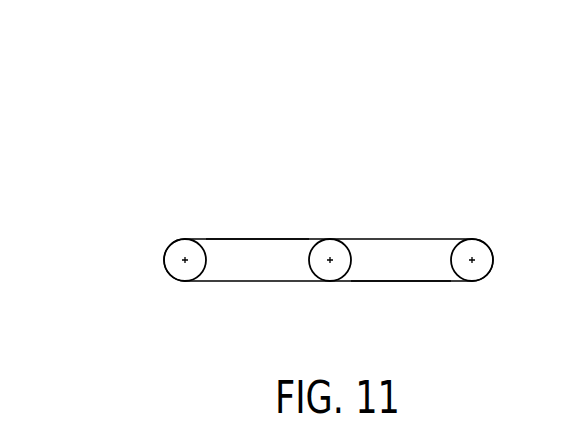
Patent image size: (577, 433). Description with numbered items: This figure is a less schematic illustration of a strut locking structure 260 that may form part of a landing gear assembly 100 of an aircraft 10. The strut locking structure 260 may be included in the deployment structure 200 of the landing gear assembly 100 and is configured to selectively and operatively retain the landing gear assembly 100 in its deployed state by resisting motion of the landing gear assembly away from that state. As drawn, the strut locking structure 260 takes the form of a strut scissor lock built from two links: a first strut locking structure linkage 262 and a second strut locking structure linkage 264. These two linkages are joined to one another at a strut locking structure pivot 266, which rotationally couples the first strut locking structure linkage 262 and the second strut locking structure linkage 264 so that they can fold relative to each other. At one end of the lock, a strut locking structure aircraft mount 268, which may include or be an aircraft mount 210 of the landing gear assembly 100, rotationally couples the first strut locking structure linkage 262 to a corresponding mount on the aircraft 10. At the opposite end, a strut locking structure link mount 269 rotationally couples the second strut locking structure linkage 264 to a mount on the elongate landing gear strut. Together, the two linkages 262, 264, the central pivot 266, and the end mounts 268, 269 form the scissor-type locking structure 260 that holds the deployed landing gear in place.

The aircraft 10 is at (152, 77).
The landing gear assembly 100 is at (183, 127).
The deployment structure 200 is at (213, 182).
The aircraft mount 210 is at (485, 237).
The strut locking structure 260 is at (388, 237).
The first strut locking structure linkage 262 is at (388, 265).
The second strut locking structure linkage 264 is at (252, 258).
The strut locking structure pivot 266 is at (326, 266).
The strut locking structure aircraft mount 268 is at (475, 268).
The strut locking structure link mount 269 is at (175, 261).